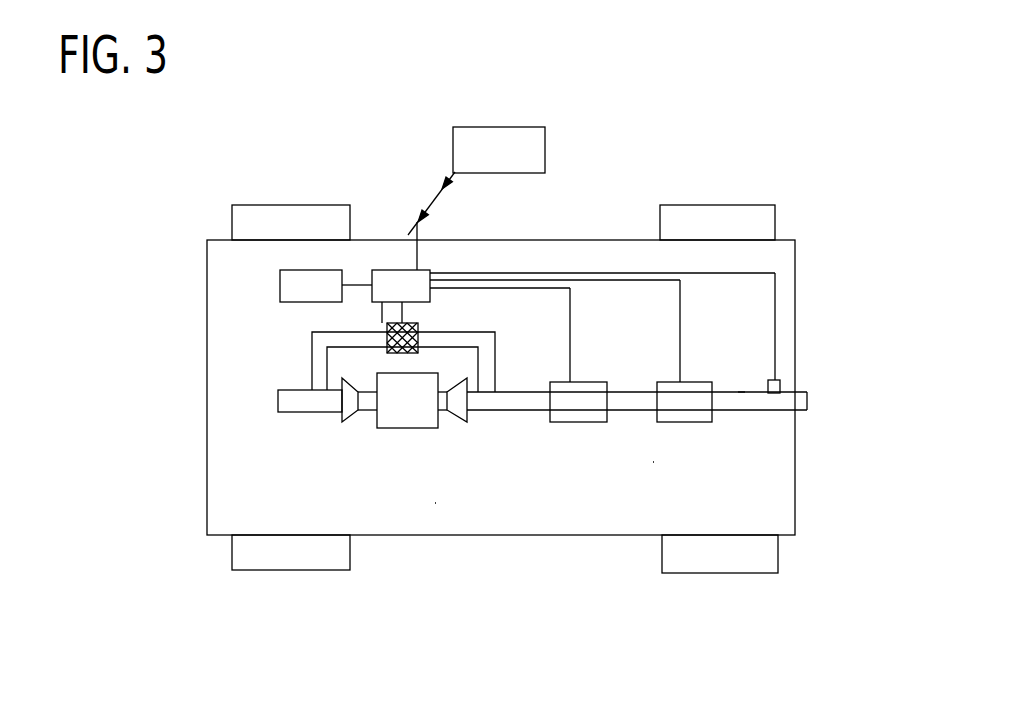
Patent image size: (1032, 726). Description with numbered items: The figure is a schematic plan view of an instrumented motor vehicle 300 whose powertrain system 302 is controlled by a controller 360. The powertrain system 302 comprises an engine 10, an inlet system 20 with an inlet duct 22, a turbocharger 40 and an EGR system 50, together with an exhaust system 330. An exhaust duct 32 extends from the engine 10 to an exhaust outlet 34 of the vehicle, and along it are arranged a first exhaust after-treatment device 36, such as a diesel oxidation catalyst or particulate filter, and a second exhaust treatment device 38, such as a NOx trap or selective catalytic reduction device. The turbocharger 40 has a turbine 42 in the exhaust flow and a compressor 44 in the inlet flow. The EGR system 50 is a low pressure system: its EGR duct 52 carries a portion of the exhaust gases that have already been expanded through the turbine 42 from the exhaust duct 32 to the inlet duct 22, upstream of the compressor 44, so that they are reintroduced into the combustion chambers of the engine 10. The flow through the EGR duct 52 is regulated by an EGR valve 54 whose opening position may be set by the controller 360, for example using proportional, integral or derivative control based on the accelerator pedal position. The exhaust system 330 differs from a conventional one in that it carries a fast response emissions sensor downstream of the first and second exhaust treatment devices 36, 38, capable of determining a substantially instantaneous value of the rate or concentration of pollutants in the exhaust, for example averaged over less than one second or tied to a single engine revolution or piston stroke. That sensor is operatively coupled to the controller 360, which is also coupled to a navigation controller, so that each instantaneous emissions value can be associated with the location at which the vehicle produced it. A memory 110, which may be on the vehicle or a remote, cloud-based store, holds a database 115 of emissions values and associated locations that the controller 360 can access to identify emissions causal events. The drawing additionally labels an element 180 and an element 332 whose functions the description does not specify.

The engine 10 is at (405, 405).
The inlet system 20 is at (302, 450).
The inlet duct 22 is at (285, 417).
The exhaust duct 32 is at (738, 392).
The exhaust outlet 34 is at (808, 403).
The first exhaust after-treatment device 36 is at (572, 422).
The second exhaust treatment device 38 is at (703, 422).
The turbocharger 40 is at (462, 468).
The turbine 42 is at (457, 415).
The compressor 44 is at (348, 420).
The EGR system 50 is at (518, 312).
The EGR duct 52 is at (466, 332).
The EGR valve 54 is at (387, 338).
The memory 110 is at (493, 127).
The database 115 is at (507, 155).
The power source 180 is at (307, 288).
The instrumented motor vehicle 300 is at (621, 155).
The powertrain system 302 is at (435, 503).
The exhaust system 330 is at (653, 462).
The position sensor 332 is at (778, 383).
The controller 360 is at (392, 287).